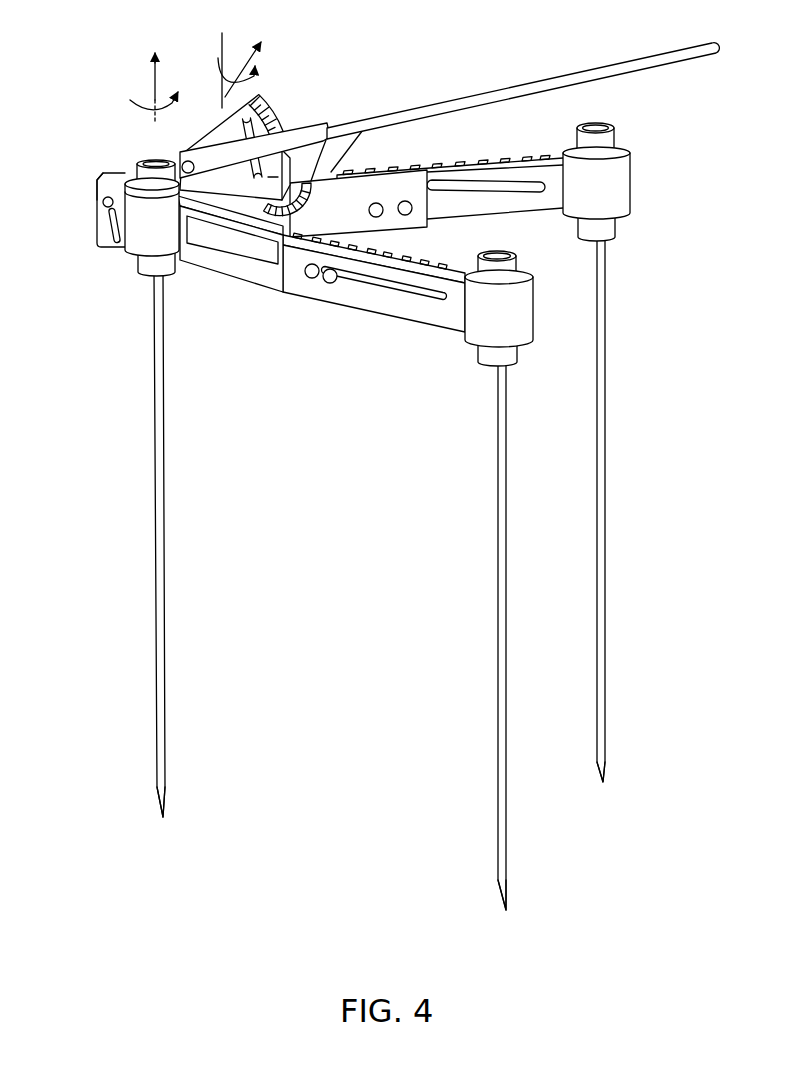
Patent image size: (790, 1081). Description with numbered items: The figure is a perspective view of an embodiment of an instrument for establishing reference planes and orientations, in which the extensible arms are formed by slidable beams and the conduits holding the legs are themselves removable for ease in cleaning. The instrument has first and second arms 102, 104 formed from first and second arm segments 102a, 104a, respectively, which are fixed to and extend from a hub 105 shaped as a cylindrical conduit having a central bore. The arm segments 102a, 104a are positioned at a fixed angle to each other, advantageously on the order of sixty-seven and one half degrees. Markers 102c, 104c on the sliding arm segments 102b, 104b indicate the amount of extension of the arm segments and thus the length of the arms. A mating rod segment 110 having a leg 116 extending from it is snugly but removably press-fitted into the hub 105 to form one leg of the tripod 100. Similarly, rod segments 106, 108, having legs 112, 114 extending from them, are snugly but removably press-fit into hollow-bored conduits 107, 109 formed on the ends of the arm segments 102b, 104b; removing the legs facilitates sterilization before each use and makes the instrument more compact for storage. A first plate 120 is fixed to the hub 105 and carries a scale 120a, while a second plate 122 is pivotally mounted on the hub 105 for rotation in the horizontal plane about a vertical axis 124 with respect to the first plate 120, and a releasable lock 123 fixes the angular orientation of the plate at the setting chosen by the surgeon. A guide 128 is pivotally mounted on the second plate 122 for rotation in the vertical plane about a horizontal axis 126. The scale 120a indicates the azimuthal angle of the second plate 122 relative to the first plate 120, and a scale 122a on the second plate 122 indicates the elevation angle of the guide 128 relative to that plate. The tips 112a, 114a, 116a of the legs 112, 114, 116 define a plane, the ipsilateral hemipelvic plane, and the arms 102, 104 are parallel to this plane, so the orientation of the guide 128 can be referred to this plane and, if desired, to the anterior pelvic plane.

The tripod 100 is at (331, 457).
The first arm 102 is at (319, 290).
The first arm segment 102a is at (247, 283).
The first arm segment 102b is at (414, 320).
The markers 102c is at (397, 271).
The second arm 104 is at (431, 181).
The second arm segment 104a is at (424, 228).
The second arm segment 104b is at (500, 216).
The markers 104c is at (448, 157).
The hub 105 is at (114, 252).
The rod segment 106 is at (520, 266).
The conduit 107 is at (526, 308).
The rod segment 108 is at (613, 137).
The conduit 109 is at (629, 182).
The mating rod segment 110 is at (144, 268).
The leg 112 is at (507, 613).
The tip 112a is at (510, 910).
The leg 114 is at (606, 613).
The tip 114a is at (609, 785).
The leg 116 is at (165, 613).
The tip 116a is at (166, 819).
The first plate 120 is at (334, 149).
The scale 120a is at (326, 170).
The second plate 122 is at (263, 131).
The scale 122a is at (280, 113).
The releasable lock 123 is at (96, 193).
The vertical axis 124 is at (155, 78).
The horizontal axis 126 is at (264, 40).
The guide 128 is at (594, 67).